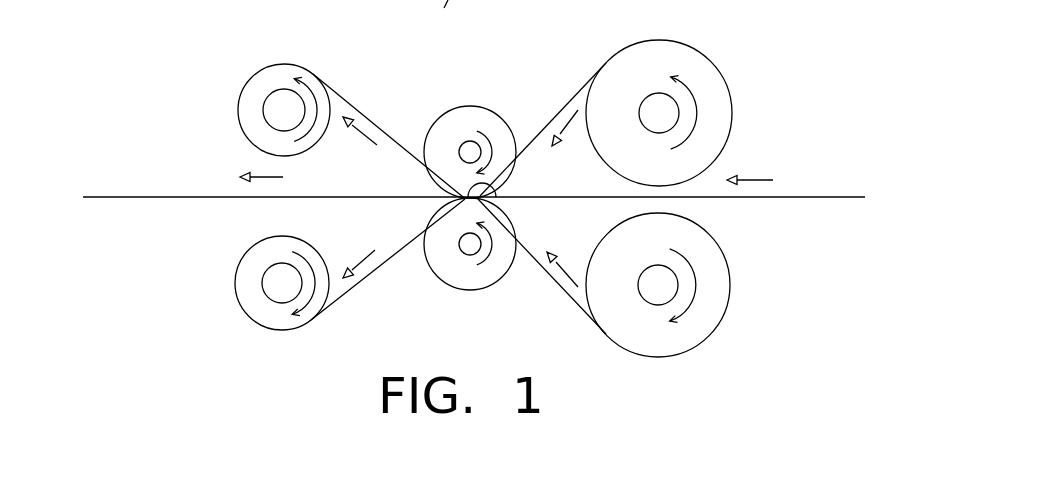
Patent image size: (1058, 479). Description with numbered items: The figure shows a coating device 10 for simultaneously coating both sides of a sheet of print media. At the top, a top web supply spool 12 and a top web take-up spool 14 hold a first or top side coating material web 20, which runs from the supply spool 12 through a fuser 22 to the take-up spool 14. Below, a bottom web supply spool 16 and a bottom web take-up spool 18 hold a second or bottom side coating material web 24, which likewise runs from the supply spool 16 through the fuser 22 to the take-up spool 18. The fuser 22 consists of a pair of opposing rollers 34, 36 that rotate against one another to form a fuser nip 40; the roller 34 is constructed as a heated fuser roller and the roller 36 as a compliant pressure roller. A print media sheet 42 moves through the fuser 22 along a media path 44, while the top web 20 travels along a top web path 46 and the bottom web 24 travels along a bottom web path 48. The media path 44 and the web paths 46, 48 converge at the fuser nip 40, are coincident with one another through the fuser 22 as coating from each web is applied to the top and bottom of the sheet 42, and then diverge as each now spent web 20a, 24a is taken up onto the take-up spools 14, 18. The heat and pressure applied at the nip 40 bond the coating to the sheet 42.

The coating device 10 is at (512, 40).
The top web supply spool 12 is at (722, 115).
The top web take-up spool 14 is at (241, 108).
The bottom web supply spool 16 is at (722, 283).
The bottom web take-up spool 18 is at (241, 287).
The top side coating material web 20 is at (566, 106).
The spent top web 20a is at (350, 104).
The fuser 22 is at (503, 316).
The bottom side coating material web 24 is at (569, 295).
The spent bottom web 24a is at (345, 293).
The heated fuser roller 34 is at (469, 115).
The compliant pressure roller 36 is at (470, 292).
The fuser nip 40 is at (497, 192).
The print media sheet 42 is at (830, 198).
The media path 44 is at (522, 180).
The top web path 46 is at (459, 136).
The bottom web path 48 is at (460, 262).